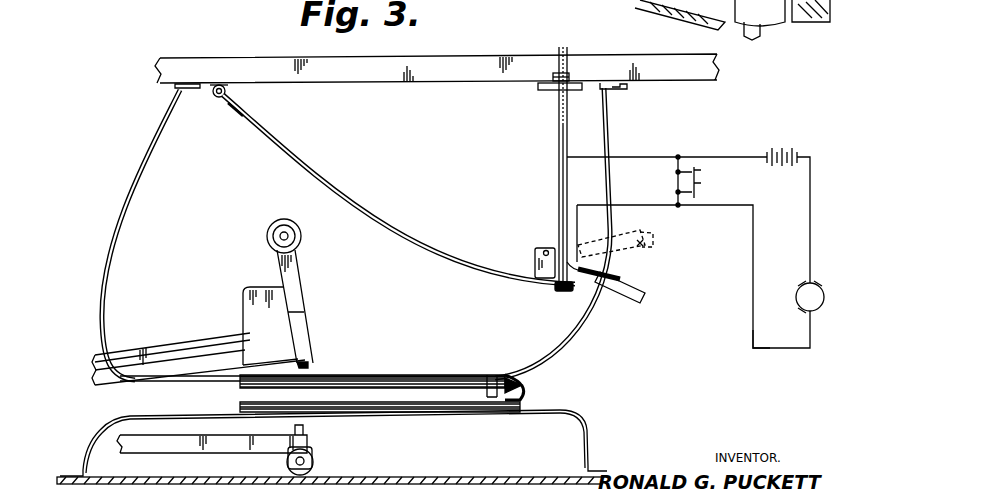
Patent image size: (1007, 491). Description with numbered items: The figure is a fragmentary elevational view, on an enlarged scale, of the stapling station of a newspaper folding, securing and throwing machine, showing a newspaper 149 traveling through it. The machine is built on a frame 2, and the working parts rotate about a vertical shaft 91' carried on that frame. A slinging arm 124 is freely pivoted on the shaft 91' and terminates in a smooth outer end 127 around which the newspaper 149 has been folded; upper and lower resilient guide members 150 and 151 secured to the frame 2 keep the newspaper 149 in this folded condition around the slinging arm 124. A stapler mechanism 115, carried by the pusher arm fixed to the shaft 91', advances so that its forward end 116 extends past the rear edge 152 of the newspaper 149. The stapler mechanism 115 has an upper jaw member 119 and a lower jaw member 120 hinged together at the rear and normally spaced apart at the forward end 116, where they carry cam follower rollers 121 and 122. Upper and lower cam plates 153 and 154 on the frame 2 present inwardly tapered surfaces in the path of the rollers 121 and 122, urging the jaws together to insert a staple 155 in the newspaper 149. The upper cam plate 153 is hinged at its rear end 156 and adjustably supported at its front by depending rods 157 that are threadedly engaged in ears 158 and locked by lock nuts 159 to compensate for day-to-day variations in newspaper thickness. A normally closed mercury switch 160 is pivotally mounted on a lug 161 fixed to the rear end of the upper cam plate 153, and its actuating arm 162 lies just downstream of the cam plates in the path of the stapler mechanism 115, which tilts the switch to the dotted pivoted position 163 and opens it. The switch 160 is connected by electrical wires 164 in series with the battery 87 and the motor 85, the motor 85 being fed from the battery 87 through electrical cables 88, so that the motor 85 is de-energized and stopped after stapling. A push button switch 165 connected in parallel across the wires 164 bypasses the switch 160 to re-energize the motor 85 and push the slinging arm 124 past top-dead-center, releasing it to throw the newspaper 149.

The frame 2 is at (517, 62).
The motor 85 is at (797, 288).
The battery 87 is at (799, 150).
The electrical cables 88 is at (760, 347).
The vertical shaft 91' is at (732, 24).
The stapler mechanism 115 is at (183, 350).
The forward end 116 is at (304, 332).
The upper jaw member 119 is at (130, 382).
The lower jaw member 120 is at (200, 453).
The cam follower roller 121 is at (285, 219).
The cam follower roller 122 is at (313, 463).
The slinging arm 124 is at (517, 383).
The outer end 127 is at (492, 373).
The newspaper 149 is at (394, 375).
The upper resilient guide member 150 is at (116, 272).
The lower resilient guide member 151 is at (123, 417).
The rear edge 152 is at (243, 389).
The upper cam plate 153 is at (378, 231).
The lower cam plate 154 is at (383, 477).
The staple 155 is at (308, 365).
The rear end 156 is at (229, 97).
The depending rods 157 is at (559, 156).
The ears 158 is at (548, 90).
The lock nuts 159 is at (565, 73).
The normally closed switch 160 is at (600, 283).
The lug 161 is at (534, 258).
The actuating arm 162 is at (645, 293).
The pivoted position 163 is at (652, 250).
The electrical wires 164 is at (640, 175).
The push button switch 165 is at (701, 173).